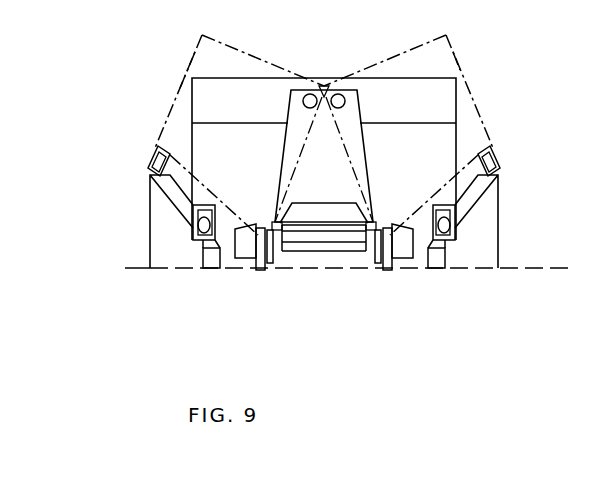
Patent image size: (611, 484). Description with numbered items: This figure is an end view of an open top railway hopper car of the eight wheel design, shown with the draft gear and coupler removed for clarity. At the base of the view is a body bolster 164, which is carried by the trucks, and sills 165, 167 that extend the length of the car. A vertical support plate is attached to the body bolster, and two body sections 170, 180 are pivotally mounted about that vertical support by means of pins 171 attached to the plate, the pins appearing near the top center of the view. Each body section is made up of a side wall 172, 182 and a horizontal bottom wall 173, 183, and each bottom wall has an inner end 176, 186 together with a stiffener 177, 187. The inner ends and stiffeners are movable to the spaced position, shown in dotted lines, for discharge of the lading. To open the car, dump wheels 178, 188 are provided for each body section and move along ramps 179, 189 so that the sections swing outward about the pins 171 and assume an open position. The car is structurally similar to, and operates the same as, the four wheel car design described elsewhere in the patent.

The body bolster 164 is at (324, 227).
The sill 165 is at (380, 255).
The sill 167 is at (265, 257).
The body section 170 is at (482, 94).
The pins 171 is at (340, 93).
The side wall 172 is at (453, 57).
The horizontal bottom wall 173 is at (443, 188).
The inner end 176 is at (372, 233).
The stiffener 177 is at (410, 252).
The dump wheel 178 is at (446, 226).
The ramp 179 is at (493, 202).
The body section 180 is at (195, 47).
The side wall 182 is at (180, 88).
The horizontal bottom wall 183 is at (202, 188).
The inner end 186 is at (273, 233).
The stiffener 187 is at (273, 253).
The dump wheel 188 is at (200, 230).
The ramp 189 is at (163, 240).